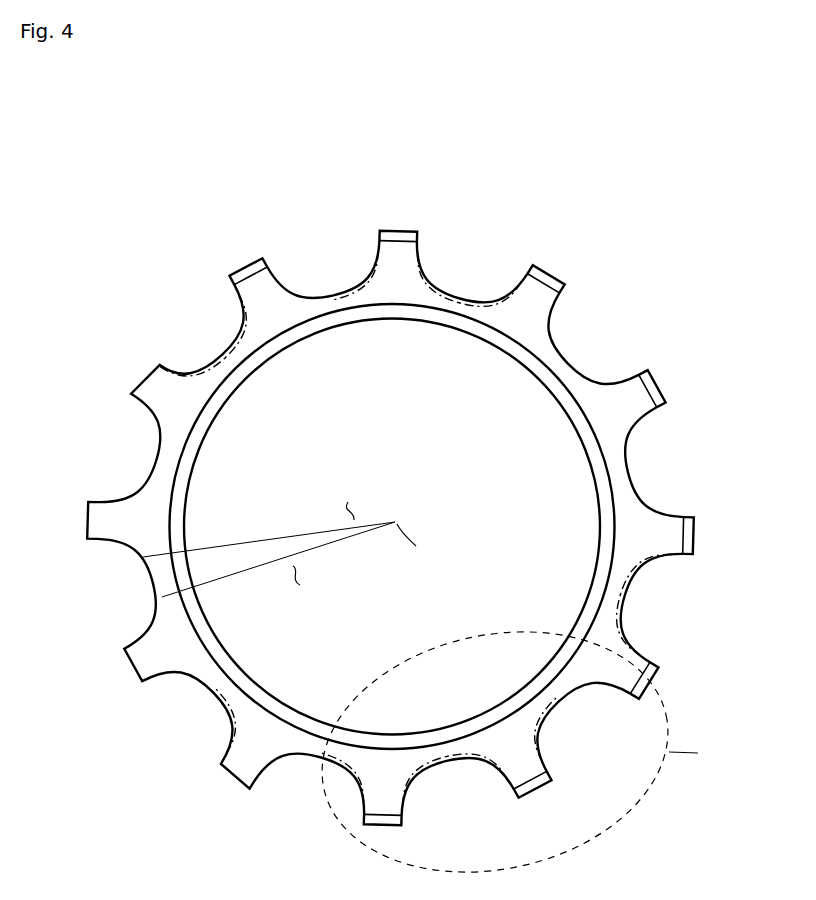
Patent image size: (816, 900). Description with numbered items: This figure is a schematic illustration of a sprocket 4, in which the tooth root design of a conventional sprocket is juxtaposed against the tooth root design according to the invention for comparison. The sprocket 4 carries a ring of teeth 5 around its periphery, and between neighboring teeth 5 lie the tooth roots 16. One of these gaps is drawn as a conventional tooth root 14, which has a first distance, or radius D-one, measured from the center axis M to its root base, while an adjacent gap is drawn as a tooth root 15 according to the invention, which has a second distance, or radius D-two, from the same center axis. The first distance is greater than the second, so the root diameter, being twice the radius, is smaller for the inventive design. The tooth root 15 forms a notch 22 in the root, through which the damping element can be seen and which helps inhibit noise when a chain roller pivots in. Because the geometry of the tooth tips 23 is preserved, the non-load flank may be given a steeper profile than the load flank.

The sprocket 4 is at (690, 282).
The teeth 5 is at (540, 285).
The conventional tooth root 14 is at (442, 293).
The tooth root 15 is at (447, 292).
The tooth roots 16 is at (660, 605).
The notch 22 is at (209, 350).
The tooth tips 23 is at (258, 260).